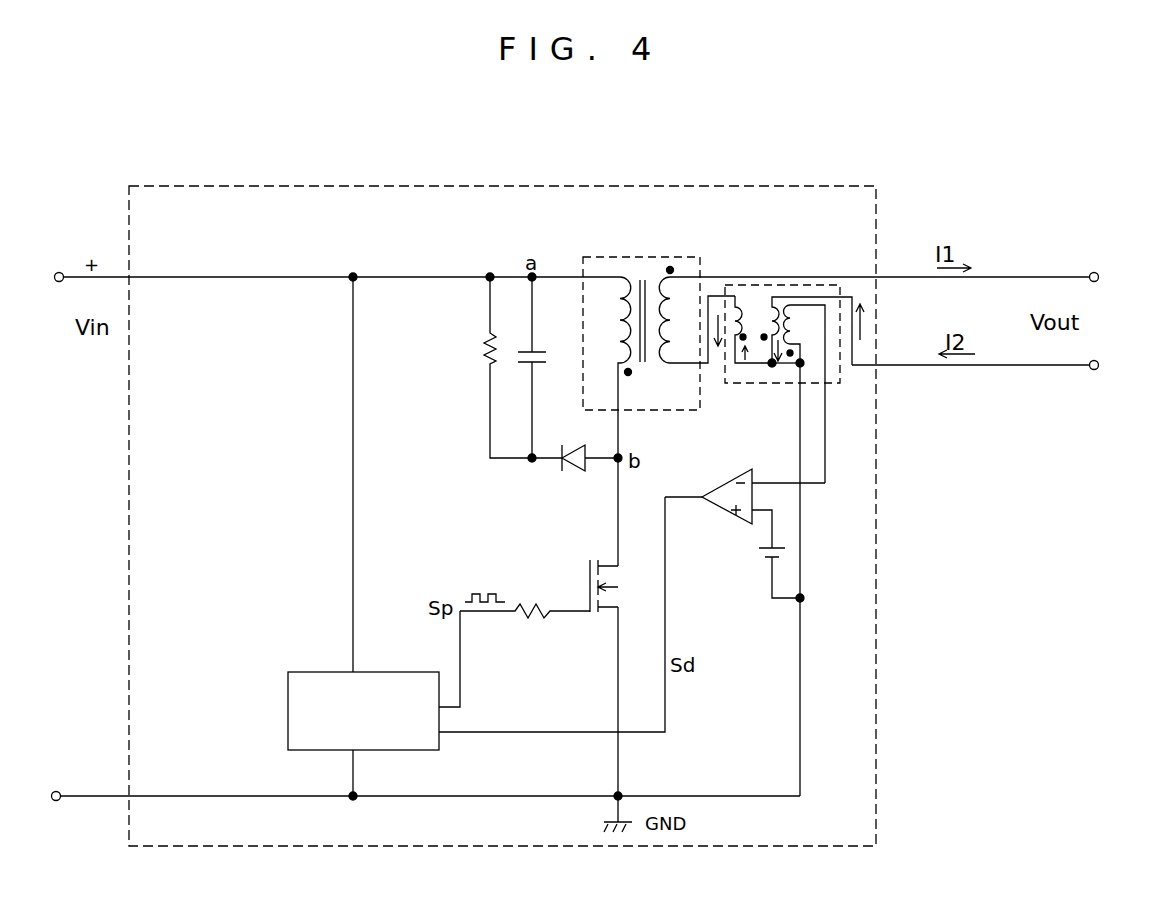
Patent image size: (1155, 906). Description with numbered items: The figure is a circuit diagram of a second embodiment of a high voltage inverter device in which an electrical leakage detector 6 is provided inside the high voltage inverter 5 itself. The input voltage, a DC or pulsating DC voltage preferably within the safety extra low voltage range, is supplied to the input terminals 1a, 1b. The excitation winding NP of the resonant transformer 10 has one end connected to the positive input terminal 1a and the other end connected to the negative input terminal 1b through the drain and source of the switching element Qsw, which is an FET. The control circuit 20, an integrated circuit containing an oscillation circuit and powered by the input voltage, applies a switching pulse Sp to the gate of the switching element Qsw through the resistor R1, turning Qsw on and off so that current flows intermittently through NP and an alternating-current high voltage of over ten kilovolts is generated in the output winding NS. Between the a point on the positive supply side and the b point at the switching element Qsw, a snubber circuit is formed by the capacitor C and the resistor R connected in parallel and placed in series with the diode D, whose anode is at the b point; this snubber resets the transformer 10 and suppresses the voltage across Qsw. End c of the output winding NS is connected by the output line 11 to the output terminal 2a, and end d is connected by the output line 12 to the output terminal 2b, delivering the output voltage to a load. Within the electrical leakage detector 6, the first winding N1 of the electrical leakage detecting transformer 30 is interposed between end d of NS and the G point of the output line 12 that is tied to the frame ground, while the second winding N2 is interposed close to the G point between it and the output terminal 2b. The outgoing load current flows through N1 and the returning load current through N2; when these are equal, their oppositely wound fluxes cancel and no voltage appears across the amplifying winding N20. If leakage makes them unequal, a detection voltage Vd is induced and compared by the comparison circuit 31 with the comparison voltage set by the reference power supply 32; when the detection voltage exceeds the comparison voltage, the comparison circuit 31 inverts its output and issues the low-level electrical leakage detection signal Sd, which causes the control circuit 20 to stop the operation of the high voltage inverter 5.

The high voltage inverter 5 is at (556, 186).
The input terminal 1a is at (59, 272).
The input terminal 1b is at (56, 801).
The output terminal 2a is at (1094, 272).
The output terminal 2b is at (1094, 370).
The transformer 10 is at (628, 257).
The output line 11 is at (900, 277).
The output line 12 is at (902, 365).
The control circuit 20 is at (288, 708).
The electrical leakage detecting transformer 30 is at (789, 356).
The comparison circuit 31 is at (745, 493).
The reference power supply 32 is at (760, 564).
The electrical leakage detector 6 is at (823, 534).
The first winding N1 is at (736, 296).
The second winding N2 is at (773, 300).
The amplifying winding N20 is at (788, 312).
The resistor R is at (492, 367).
The capacitor C is at (540, 367).
The diode D is at (575, 475).
The switching element Qsw is at (581, 586).
The resistor R1 is at (525, 629).